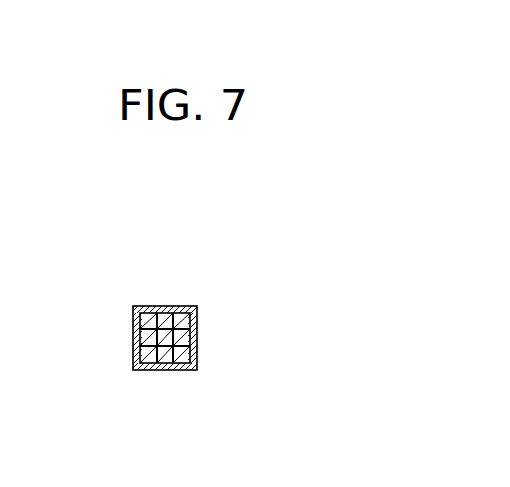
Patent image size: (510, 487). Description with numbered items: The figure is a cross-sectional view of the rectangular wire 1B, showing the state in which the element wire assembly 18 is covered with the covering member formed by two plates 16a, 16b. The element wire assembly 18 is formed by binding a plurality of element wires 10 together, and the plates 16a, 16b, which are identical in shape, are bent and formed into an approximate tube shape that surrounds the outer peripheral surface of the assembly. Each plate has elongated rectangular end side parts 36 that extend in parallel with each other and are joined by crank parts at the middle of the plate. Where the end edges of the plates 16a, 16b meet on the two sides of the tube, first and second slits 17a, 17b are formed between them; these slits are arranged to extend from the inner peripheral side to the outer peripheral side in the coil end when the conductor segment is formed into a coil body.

The rectangular wire 1B is at (209, 307).
The element wire 10 is at (182, 320).
The end side part 36 is at (174, 339).
The plate 16a is at (156, 265).
The plate 16b is at (185, 412).
The first slit 17a is at (197, 339).
The second slit 17b is at (133, 339).
The element wire assembly 18 is at (163, 362).